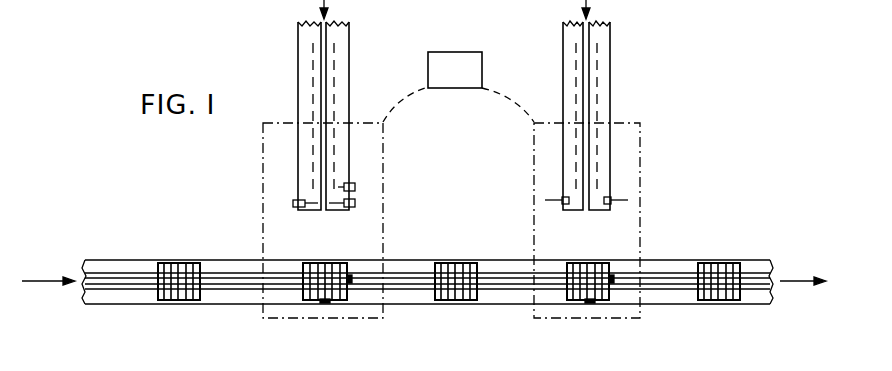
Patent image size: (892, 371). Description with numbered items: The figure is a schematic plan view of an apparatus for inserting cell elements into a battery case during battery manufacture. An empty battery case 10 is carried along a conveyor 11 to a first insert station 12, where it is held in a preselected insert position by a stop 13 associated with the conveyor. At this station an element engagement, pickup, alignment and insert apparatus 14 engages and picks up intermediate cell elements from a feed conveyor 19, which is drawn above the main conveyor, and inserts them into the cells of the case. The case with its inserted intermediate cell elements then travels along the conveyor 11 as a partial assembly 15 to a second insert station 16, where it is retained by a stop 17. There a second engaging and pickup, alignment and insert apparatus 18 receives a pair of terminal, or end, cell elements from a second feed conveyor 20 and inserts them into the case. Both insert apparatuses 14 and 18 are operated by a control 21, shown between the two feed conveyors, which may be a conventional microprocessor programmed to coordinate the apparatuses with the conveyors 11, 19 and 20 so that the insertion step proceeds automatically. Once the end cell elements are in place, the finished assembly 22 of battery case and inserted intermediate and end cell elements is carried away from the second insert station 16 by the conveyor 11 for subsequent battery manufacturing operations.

The battery case 10 is at (156, 298).
The conveyor 11 is at (108, 280).
The first insert station 12 is at (320, 312).
The stop 13 is at (354, 281).
The element engagement, pickup, alignment and insert apparatus 14 is at (263, 318).
The partial assembly 15 is at (479, 262).
The second insert station 16 is at (597, 315).
The stop 17 is at (614, 279).
The second engaging and pickup, alignment and insert apparatus 18 is at (534, 318).
The conveyor 19 is at (356, 60).
The second feed conveyor 20 is at (617, 59).
The control 21 is at (455, 48).
The assembly of battery case and inserted cell elements 22 is at (731, 258).